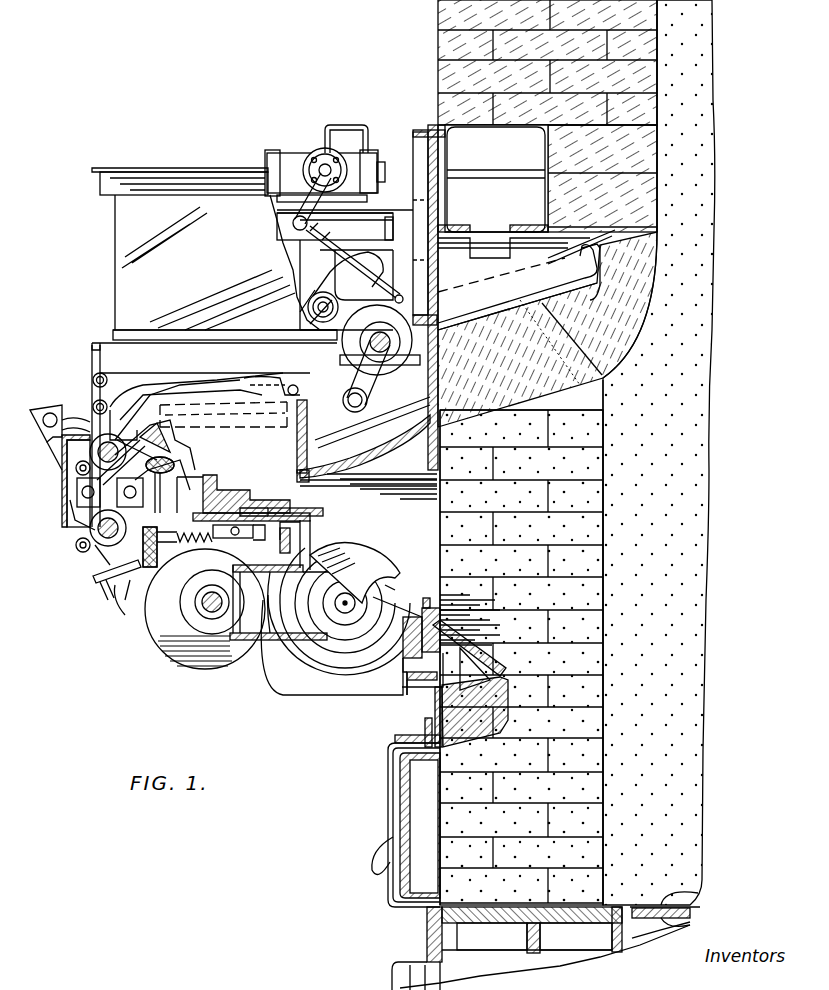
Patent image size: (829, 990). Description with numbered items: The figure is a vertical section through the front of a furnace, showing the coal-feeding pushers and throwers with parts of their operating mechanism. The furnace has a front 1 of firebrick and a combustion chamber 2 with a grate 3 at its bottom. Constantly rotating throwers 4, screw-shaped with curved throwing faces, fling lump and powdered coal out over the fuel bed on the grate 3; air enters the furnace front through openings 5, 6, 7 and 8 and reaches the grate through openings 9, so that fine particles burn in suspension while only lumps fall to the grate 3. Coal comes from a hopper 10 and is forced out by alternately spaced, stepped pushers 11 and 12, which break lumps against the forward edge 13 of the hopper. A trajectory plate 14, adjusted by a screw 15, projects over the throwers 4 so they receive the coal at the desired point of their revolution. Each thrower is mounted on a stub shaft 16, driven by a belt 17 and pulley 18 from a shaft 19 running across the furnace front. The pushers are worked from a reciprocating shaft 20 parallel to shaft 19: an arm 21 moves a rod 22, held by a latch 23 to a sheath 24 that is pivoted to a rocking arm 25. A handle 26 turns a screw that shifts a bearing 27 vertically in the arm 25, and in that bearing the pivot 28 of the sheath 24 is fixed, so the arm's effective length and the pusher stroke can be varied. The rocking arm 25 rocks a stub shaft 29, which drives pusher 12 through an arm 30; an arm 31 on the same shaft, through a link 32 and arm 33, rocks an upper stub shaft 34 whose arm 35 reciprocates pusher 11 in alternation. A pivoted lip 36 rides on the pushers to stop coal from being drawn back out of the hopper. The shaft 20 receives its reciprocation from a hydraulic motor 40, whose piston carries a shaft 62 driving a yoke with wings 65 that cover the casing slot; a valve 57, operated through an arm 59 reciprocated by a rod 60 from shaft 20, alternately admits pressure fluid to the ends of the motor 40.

The front 1 is at (438, 20).
The burning or combustion chamber 2 is at (700, 420).
The grate 3 is at (698, 893).
The throwers 4 is at (373, 553).
The opening 5 is at (605, 380).
The opening 6 is at (375, 455).
The opening 7 is at (302, 540).
The opening 8 is at (503, 675).
The openings 9 is at (700, 928).
The hopper 10 is at (214, 259).
The pusher 11 is at (238, 487).
The pusher 12 is at (83, 507).
The forward edge 13 is at (297, 465).
The trajectory plate 14 is at (322, 512).
The screw 15 is at (192, 567).
The stub shaft 16 is at (350, 612).
The belt 17 is at (270, 640).
The pulley 18 is at (212, 640).
The shaft 19 is at (205, 610).
The reciprocating shaft 20 is at (380, 337).
The arm 21 is at (385, 400).
The rod 22 is at (282, 423).
The latch 23 is at (244, 378).
The sheath 24 is at (155, 398).
The rocking arm 25 is at (57, 440).
The handle 26 is at (125, 590).
The bearing 27 is at (63, 450).
The pivot 28 is at (62, 410).
The stub shaft 29 is at (100, 572).
The arm 30 is at (67, 532).
The arm 31 is at (95, 560).
The link 32 is at (77, 540).
The arm 33 is at (83, 502).
The stub shaft 34 is at (140, 448).
The arm 35 is at (150, 460).
The pivoted lip 36 is at (175, 468).
The hydraulic motor 40 is at (300, 275).
The valve 57 is at (295, 160).
The arm 59 is at (292, 224).
The rod 60 is at (335, 258).
The shaft 62 is at (308, 300).
The wings 65 is at (400, 284).